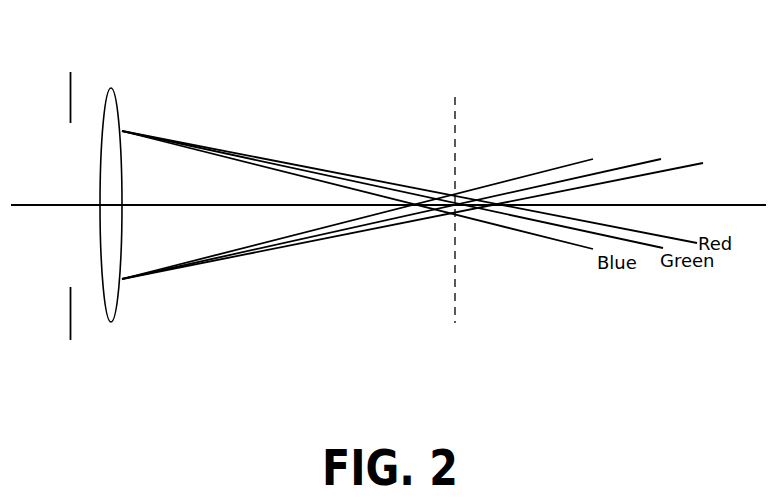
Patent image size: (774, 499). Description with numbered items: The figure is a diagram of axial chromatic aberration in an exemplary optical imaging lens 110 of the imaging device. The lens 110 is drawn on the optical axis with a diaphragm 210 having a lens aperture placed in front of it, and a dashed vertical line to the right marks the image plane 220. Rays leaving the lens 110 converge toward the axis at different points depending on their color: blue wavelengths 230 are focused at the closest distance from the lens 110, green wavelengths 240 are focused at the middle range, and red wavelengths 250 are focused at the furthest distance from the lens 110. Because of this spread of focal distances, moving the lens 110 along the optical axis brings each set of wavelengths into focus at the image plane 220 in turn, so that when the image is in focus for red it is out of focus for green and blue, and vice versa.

The optical imaging lens 110 is at (110, 88).
The diaphragm 210 is at (70, 72).
The image plane 220 is at (455, 193).
The blue wavelengths 230 is at (364, 207).
The green wavelengths 240 is at (401, 207).
The red wavelengths 250 is at (429, 208).